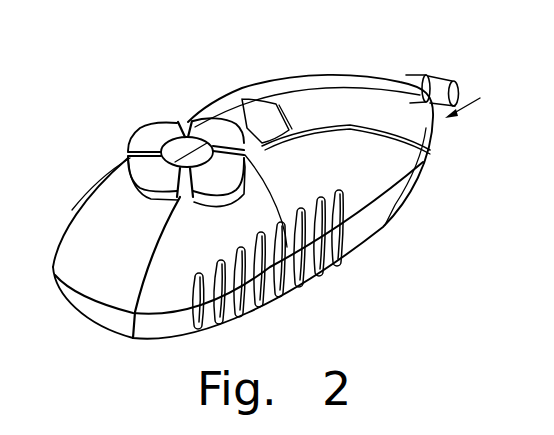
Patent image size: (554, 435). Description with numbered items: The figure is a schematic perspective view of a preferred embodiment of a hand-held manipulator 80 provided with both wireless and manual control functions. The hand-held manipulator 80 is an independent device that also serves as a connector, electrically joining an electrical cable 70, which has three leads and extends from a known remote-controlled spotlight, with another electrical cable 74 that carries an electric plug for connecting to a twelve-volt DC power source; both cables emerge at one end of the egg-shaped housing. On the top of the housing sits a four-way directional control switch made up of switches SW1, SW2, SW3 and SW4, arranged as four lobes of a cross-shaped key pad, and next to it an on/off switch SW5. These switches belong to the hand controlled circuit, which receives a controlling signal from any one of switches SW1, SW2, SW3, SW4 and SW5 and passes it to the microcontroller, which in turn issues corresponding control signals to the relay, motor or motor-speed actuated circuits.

The hand-held manipulator 80 is at (53, 57).
The four-way directional control switch SW1 is at (200, 125).
The four-way directional control switch SW2 is at (140, 170).
The four-way directional control switch SW3 is at (158, 132).
The four-way directional control switch SW4 is at (222, 168).
The on/off switch SW5 is at (247, 100).
The electrical cable 74 is at (418, 80).
The electrical cable 70 is at (445, 88).